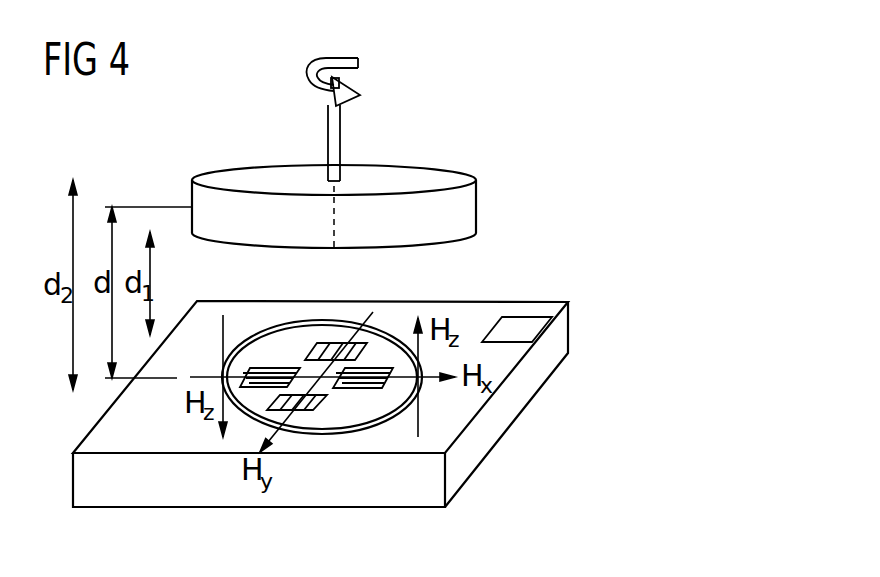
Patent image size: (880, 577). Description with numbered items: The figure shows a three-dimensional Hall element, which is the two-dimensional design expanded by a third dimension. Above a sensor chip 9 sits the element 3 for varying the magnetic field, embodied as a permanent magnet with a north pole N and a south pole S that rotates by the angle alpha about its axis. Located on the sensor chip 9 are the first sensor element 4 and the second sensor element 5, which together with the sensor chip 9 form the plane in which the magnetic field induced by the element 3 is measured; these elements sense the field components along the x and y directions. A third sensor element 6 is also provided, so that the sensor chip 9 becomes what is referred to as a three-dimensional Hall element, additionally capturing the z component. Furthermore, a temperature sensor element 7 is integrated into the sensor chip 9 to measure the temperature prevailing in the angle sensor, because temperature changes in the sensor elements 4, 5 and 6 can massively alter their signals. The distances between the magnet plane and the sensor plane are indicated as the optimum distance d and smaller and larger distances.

The rotatable element for varying a field 3 is at (478, 203).
The first sensor element 4 is at (367, 390).
The second sensor element 5 is at (310, 411).
The third sensor element 6 is at (318, 322).
The temperature sensor element 7 is at (518, 328).
The sensor chip 9 is at (507, 415).